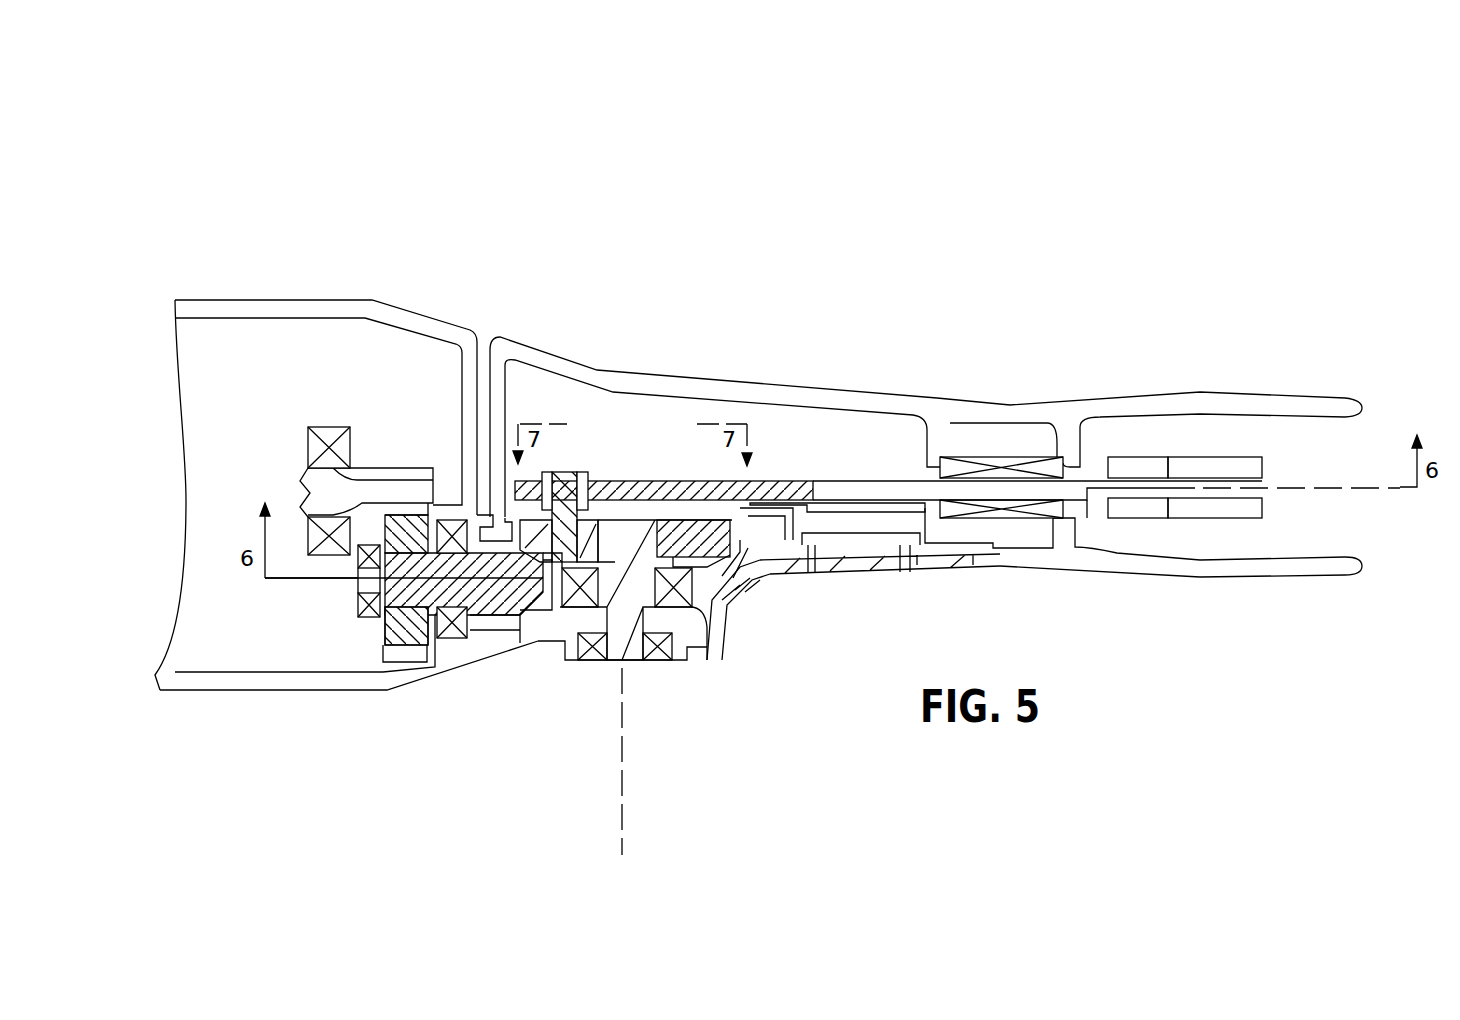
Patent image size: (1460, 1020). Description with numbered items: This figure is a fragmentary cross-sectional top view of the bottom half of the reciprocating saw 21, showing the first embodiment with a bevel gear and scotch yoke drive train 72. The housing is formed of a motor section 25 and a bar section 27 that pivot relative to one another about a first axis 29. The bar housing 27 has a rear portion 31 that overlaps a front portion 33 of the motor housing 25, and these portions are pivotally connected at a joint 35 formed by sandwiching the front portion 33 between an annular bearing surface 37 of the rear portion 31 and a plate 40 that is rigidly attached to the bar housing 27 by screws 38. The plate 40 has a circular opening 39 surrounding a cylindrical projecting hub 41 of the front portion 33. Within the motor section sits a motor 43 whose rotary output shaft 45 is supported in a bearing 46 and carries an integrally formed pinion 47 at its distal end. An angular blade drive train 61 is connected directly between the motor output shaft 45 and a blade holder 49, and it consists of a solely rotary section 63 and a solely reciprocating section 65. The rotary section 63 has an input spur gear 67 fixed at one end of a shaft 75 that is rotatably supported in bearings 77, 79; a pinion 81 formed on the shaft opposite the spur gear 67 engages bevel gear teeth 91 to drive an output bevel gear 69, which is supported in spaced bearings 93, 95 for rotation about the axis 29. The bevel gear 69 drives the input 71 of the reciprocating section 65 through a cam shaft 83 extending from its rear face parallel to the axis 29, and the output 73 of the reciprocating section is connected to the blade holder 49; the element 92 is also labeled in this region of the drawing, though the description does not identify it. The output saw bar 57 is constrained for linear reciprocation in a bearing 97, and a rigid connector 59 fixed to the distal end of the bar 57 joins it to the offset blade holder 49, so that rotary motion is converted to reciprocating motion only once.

The reciprocating saw 21 is at (628, 214).
The motor section 25 is at (332, 310).
The bar section 27 is at (905, 395).
The first axis 29 is at (628, 833).
The rear portion 31 is at (670, 388).
The front portion 33 is at (605, 662).
The joint 35 is at (668, 705).
The annular bearing surface 37 is at (485, 515).
The screws 38 is at (862, 540).
The circular opening 39 is at (565, 665).
The plate 40 is at (880, 570).
The cylindrical projecting hub 41 is at (690, 680).
The motor 43 is at (294, 467).
The rotary output shaft 45 is at (337, 470).
The bearing 46 is at (327, 432).
The pinion 47 is at (387, 473).
The blade holder 49 is at (1210, 455).
The output saw bar 57 is at (858, 492).
The rigid connector 59 is at (1142, 508).
The angular blade drive train 61 is at (840, 285).
The rotary section 63 is at (498, 645).
The reciprocating section 65 is at (772, 463).
The input spur gear 67 is at (387, 650).
The output bevel gear 69 is at (678, 520).
The input of reciprocating section 71 is at (613, 490).
The bevel gear and scotch yoke drive train 72 is at (813, 434).
The output of reciprocating section 73 is at (1093, 477).
The shaft 75 is at (358, 585).
The bearing 77 is at (368, 620).
The bearing 79 is at (455, 638).
The pinion 81 is at (520, 617).
The cam shaft 83 is at (565, 478).
The bevel gear teeth 91 is at (723, 558).
The web 92 is at (637, 530).
The bearing 93 is at (682, 607).
The bearing 95 is at (658, 662).
The bearing 97 is at (995, 455).